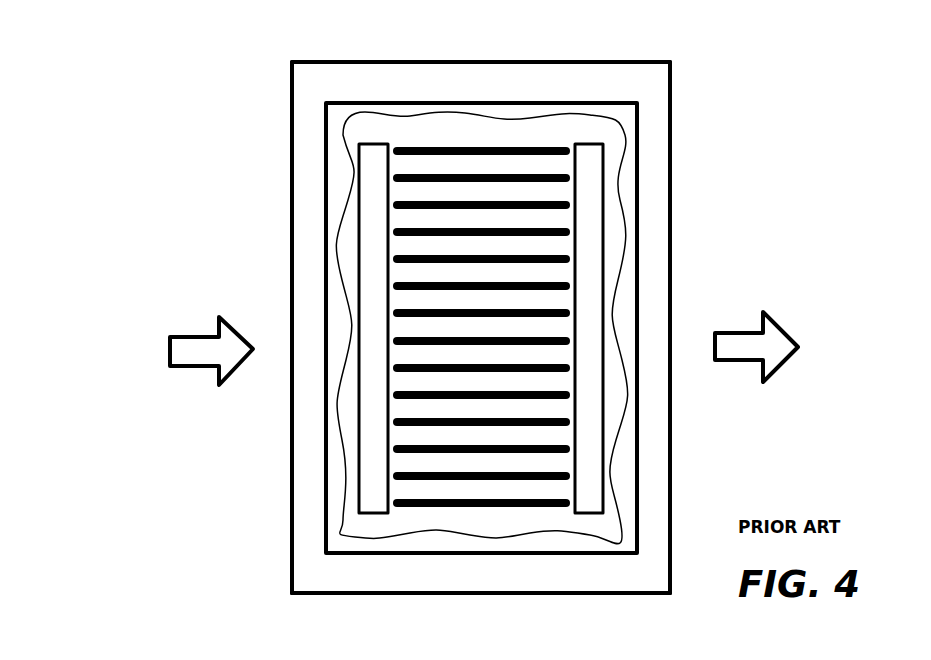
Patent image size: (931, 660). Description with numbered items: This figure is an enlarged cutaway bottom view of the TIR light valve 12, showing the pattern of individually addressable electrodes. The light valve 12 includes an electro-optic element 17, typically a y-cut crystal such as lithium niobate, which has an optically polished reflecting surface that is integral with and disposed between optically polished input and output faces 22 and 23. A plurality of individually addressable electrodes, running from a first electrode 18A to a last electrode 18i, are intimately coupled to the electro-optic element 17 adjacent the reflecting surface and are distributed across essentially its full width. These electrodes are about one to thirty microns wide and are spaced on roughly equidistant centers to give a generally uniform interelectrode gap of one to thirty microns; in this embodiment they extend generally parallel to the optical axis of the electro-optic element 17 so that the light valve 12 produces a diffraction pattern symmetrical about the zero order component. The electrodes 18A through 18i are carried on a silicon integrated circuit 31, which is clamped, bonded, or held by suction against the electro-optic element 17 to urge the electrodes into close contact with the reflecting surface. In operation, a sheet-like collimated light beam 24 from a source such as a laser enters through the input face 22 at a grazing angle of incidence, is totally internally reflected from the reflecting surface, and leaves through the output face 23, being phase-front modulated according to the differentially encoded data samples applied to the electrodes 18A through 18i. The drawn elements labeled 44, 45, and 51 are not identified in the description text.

The light valve 12 is at (289, 79).
The electro-optic element 17 is at (355, 595).
The input face 22 is at (291, 208).
The output face 23 is at (671, 210).
The light beam 24 is at (195, 336).
The silicon integrated circuit 31 is at (617, 110).
The first electrode plate 44 is at (368, 443).
The second electrode plate 45 is at (593, 444).
The insulating boundary 51 is at (393, 132).
The individually addressable electrode 18A is at (508, 147).
The individually addressable electrode 18i is at (510, 506).